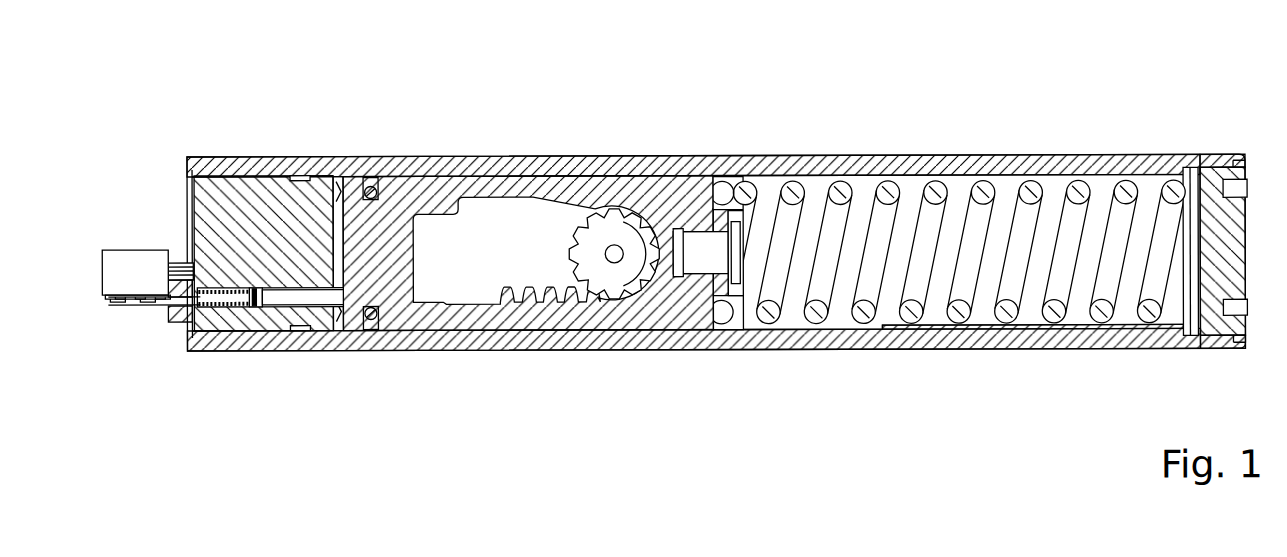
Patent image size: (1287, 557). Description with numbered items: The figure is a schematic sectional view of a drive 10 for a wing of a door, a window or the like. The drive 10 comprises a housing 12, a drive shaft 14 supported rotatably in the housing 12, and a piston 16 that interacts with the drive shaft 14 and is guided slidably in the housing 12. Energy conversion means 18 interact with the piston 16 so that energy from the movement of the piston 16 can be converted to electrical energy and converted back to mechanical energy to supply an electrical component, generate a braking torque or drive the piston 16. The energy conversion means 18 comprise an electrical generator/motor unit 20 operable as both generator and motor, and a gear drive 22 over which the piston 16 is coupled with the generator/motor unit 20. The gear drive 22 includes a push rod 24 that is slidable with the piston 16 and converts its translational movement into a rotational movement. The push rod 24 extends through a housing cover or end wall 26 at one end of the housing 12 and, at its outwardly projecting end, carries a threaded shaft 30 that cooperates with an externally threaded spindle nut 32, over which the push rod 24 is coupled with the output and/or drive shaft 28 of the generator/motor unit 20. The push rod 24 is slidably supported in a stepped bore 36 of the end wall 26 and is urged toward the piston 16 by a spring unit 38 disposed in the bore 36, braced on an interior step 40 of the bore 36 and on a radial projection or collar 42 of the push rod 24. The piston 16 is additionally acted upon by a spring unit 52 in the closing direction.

The drive 10 is at (683, 96).
The housing 12 is at (1042, 160).
The drive shaft 14 is at (620, 248).
The piston 16 is at (431, 196).
The energy conversion means 18 is at (170, 248).
The electrical generator/motor unit 20 is at (115, 265).
The gear drive 22 is at (163, 316).
The push rod 24 is at (288, 306).
The housing cover or end wall 26 is at (261, 203).
The output and/or drive shaft 28 is at (180, 262).
The threaded shaft 30 is at (118, 300).
The spindle nut 32 is at (180, 322).
The stepped bore 36 is at (328, 236).
The spring unit 38 is at (240, 306).
The interior step 40 is at (214, 290).
The radial projection or collar 42 is at (256, 308).
The spring unit 52 is at (956, 326).